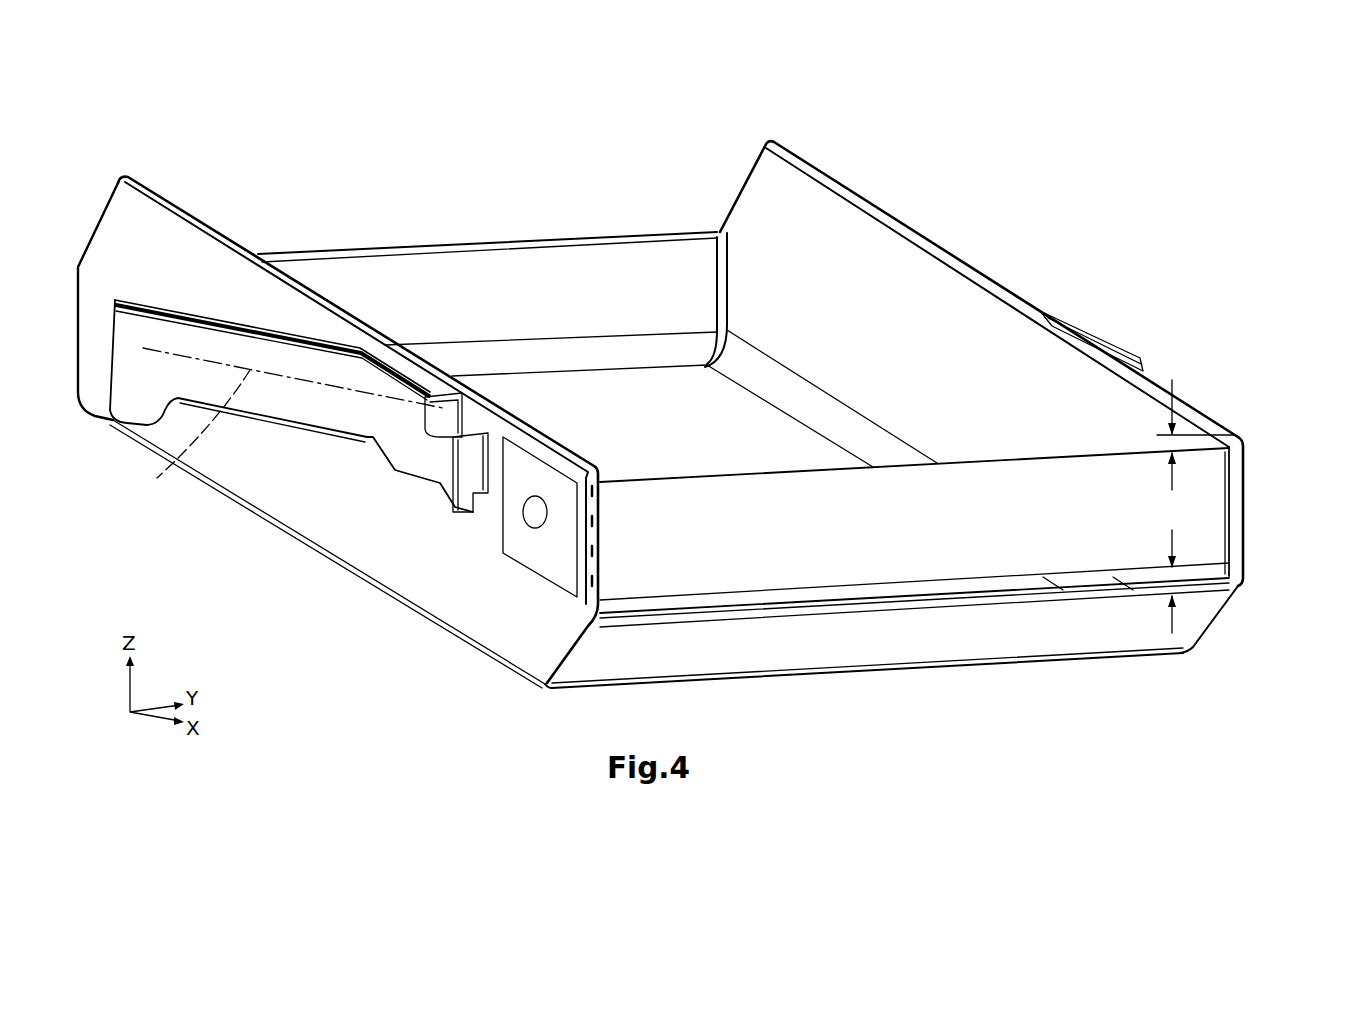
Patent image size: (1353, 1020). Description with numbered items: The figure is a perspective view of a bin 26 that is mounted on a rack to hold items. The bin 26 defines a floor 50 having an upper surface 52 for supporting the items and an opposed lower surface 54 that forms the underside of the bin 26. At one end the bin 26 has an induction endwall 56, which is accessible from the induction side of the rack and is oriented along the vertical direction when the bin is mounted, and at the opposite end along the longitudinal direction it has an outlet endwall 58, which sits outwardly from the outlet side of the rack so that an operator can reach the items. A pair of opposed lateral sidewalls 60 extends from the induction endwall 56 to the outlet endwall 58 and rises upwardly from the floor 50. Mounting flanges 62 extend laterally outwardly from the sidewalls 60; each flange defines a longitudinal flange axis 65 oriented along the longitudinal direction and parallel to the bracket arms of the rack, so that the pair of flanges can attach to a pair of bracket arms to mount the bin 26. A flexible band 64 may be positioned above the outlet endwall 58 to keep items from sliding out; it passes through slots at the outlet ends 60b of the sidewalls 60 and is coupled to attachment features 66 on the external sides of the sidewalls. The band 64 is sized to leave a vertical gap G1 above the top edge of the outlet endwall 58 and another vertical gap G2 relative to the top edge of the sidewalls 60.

The bin 26 is at (948, 158).
The floor 50 is at (520, 395).
The upper surface 52 is at (640, 417).
The lower surface 54 is at (337, 560).
The induction endwall 56 is at (332, 287).
The outlet endwall 58 is at (787, 650).
The lateral sidewalls 60 is at (1127, 408).
The outlet ends of the sidewalls 60b is at (1242, 517).
The mounting flanges 62 is at (283, 393).
The flexible band 64 is at (963, 552).
The longitudinal flange axis 65 is at (283, 420).
The attachment features 66 is at (535, 513).
The vertical gap G1 is at (1177, 412).
The vertical gap G2 is at (1173, 622).